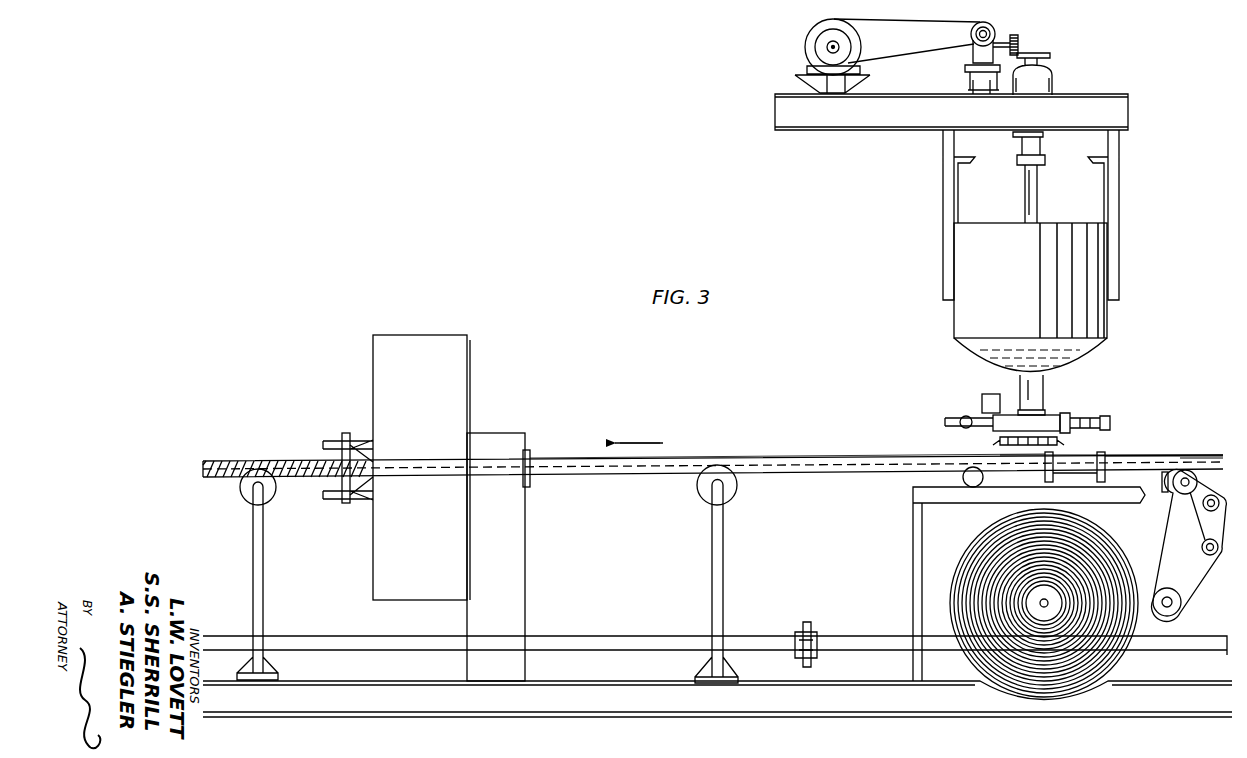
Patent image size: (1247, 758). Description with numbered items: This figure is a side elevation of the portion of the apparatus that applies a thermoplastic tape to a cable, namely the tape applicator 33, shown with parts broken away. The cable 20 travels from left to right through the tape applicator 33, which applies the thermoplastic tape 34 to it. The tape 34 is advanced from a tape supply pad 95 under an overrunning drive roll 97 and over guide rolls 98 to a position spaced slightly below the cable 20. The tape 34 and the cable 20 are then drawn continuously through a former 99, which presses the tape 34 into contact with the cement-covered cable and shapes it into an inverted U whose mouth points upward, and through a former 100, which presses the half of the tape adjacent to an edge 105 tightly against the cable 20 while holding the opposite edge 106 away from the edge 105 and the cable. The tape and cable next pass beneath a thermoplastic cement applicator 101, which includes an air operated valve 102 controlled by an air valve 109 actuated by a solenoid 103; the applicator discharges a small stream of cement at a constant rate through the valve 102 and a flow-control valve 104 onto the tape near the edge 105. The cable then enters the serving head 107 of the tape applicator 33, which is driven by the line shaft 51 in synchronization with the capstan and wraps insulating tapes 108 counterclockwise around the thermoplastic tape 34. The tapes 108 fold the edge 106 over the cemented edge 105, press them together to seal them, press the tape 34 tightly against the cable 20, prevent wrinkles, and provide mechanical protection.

The cable 20 is at (1180, 460).
The tape applicator 33 is at (795, 450).
The thermoplastic tape 34 is at (1204, 504).
The line shaft 51 is at (613, 636).
The tape supply pad 95 is at (965, 560).
The overrunning drive roll 97 is at (1168, 590).
The guide rolls 98 is at (1190, 470).
The former 99 is at (1105, 452).
The former 100 is at (1036, 457).
The thermoplastic cement applicator 101 is at (1113, 330).
The air operated valve 102 is at (1045, 416).
The solenoid 103 is at (983, 400).
The flow-control valve 104 is at (1000, 441).
The edge of tape 105 is at (848, 458).
The edge of tape 106 is at (757, 457).
The serving head 107 is at (473, 355).
The tapes 108 is at (365, 435).
The air valve 109 is at (968, 419).